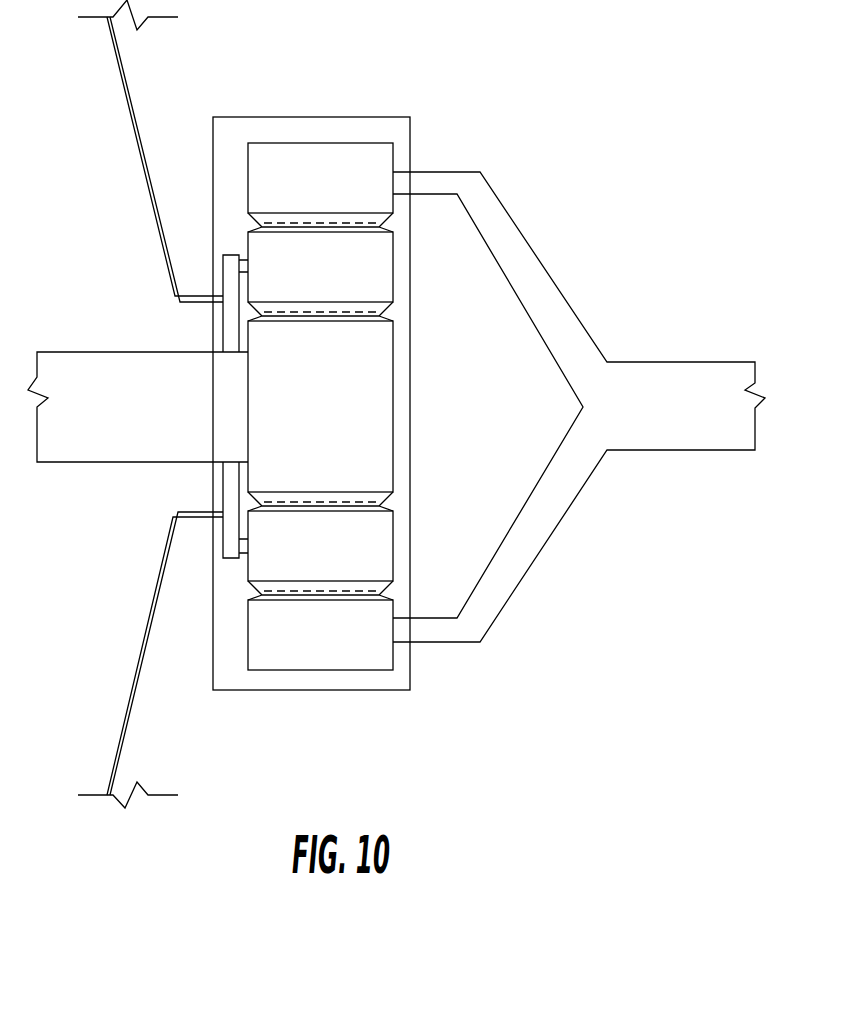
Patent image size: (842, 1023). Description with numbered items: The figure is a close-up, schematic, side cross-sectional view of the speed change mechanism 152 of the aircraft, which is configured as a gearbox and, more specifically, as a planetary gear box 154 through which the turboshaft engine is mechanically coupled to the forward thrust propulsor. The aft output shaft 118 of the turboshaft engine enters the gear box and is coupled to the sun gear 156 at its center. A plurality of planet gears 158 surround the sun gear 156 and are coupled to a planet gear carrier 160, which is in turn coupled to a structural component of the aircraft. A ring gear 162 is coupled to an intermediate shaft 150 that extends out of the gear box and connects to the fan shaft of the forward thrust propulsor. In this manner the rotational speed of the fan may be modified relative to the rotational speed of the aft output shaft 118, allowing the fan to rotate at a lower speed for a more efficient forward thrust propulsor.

The aft output shaft 118 is at (88, 368).
The intermediate shaft 150 is at (650, 368).
The speed change mechanism 152 is at (370, 350).
The planetary gear box 154 is at (311, 403).
The sun gear 156 is at (302, 419).
The planet gears 158 is at (302, 287).
The planet gear carrier 160 is at (223, 312).
The ring gear 162 is at (302, 201).